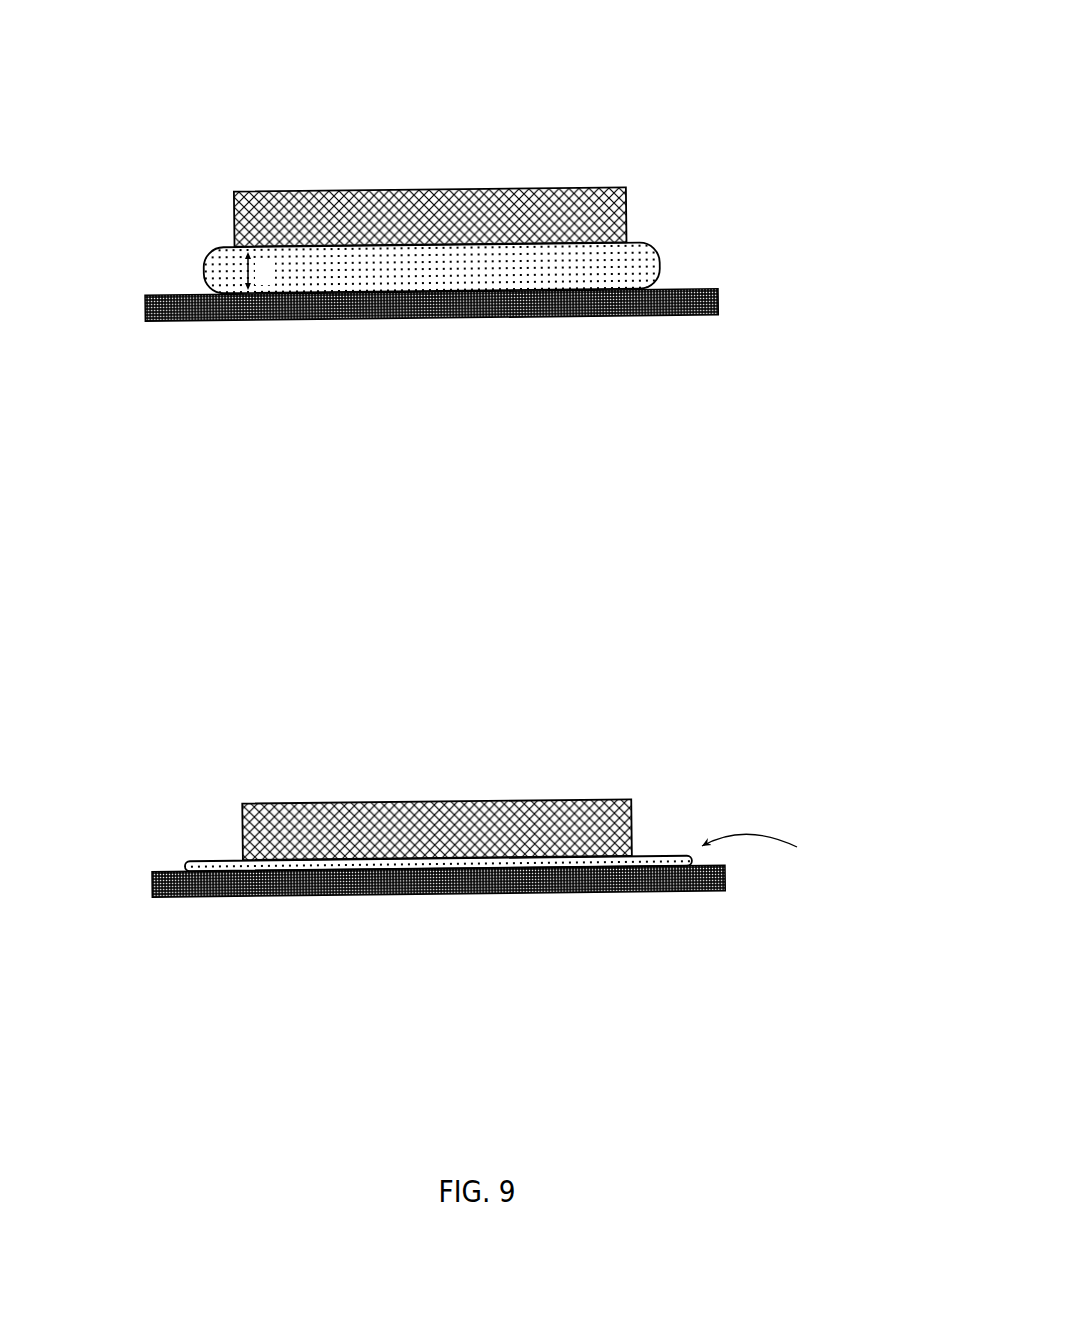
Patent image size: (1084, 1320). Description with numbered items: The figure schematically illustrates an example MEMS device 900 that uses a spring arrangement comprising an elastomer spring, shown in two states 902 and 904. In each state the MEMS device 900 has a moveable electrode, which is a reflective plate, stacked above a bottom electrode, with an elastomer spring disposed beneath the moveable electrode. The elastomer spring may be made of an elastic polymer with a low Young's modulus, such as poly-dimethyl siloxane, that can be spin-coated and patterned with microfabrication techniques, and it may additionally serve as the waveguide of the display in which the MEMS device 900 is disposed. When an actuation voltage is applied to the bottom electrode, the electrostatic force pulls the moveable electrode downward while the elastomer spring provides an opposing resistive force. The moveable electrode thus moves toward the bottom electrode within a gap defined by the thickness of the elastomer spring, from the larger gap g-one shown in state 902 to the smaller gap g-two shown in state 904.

The MEMS device 900 is at (458, 97).
The state 902 is at (474, 264).
The state 904 is at (492, 857).